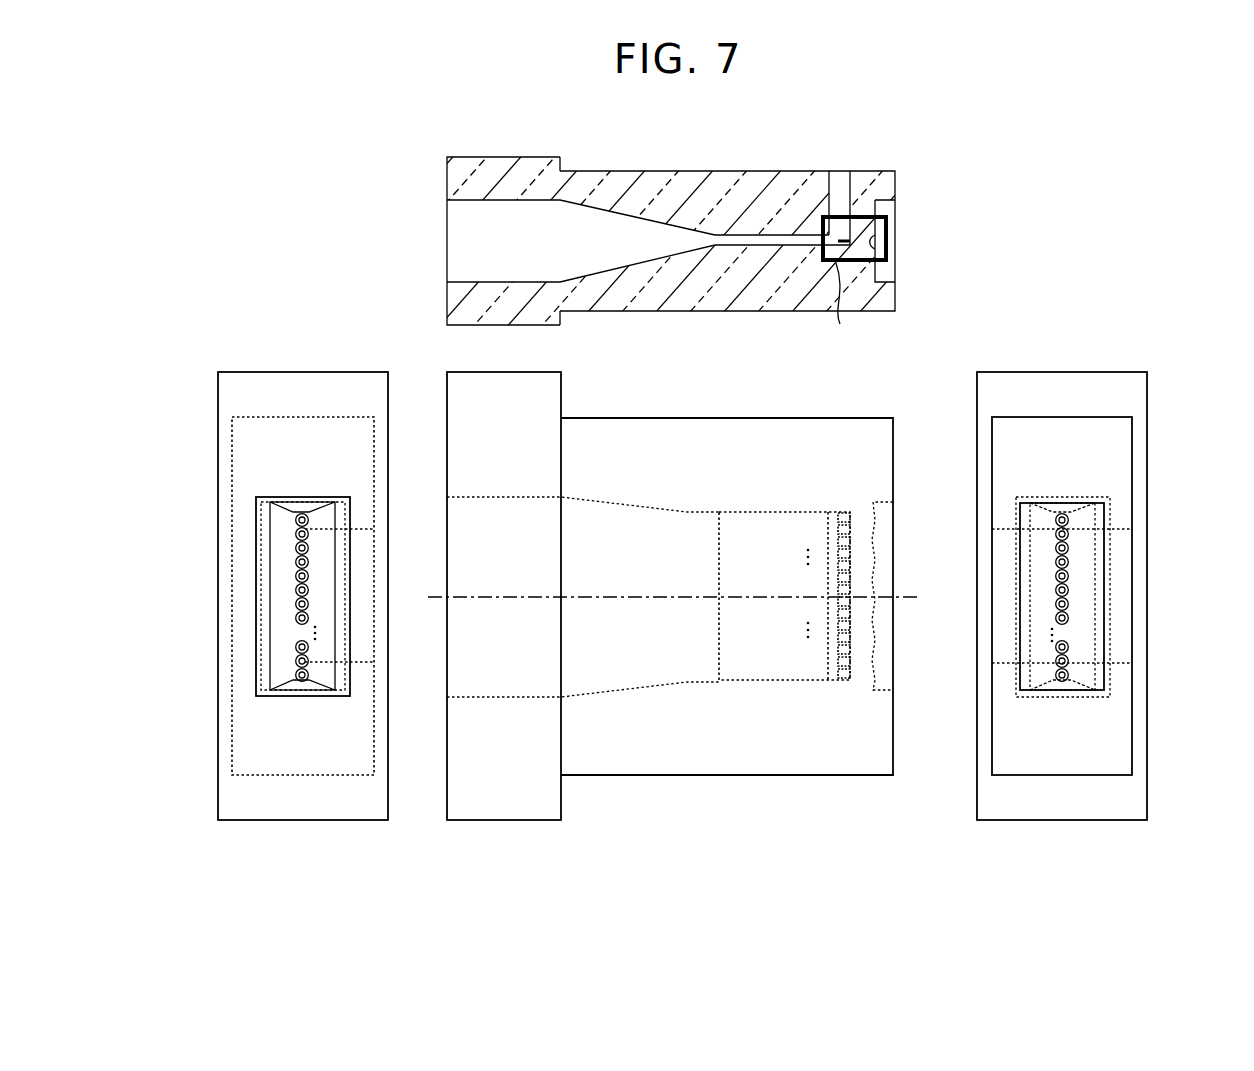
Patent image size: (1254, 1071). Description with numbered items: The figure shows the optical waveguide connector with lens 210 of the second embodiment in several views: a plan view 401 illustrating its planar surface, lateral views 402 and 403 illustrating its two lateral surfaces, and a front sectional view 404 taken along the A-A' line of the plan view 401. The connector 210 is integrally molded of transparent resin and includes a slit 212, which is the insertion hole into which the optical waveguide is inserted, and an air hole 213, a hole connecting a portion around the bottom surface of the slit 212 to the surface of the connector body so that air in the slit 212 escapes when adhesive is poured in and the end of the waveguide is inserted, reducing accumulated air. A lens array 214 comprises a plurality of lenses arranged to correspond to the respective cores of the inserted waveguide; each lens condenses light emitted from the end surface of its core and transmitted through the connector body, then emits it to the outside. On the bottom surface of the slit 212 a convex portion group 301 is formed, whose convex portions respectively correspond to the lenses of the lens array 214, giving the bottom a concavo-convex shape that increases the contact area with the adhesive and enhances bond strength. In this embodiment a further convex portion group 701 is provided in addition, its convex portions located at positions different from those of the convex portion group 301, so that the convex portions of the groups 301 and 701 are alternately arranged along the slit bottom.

The optical waveguide connector with lens 210 is at (447, 157).
The slit 212 is at (768, 511).
The air hole 213 is at (836, 181).
The lens array 214 is at (887, 680).
The convex portion group 301 is at (838, 670).
The plan view 401 is at (832, 410).
The lateral view 402 is at (332, 356).
The lateral view 403 is at (1113, 357).
The front sectional view 404 is at (728, 152).
The convex portion group 701 is at (838, 547).